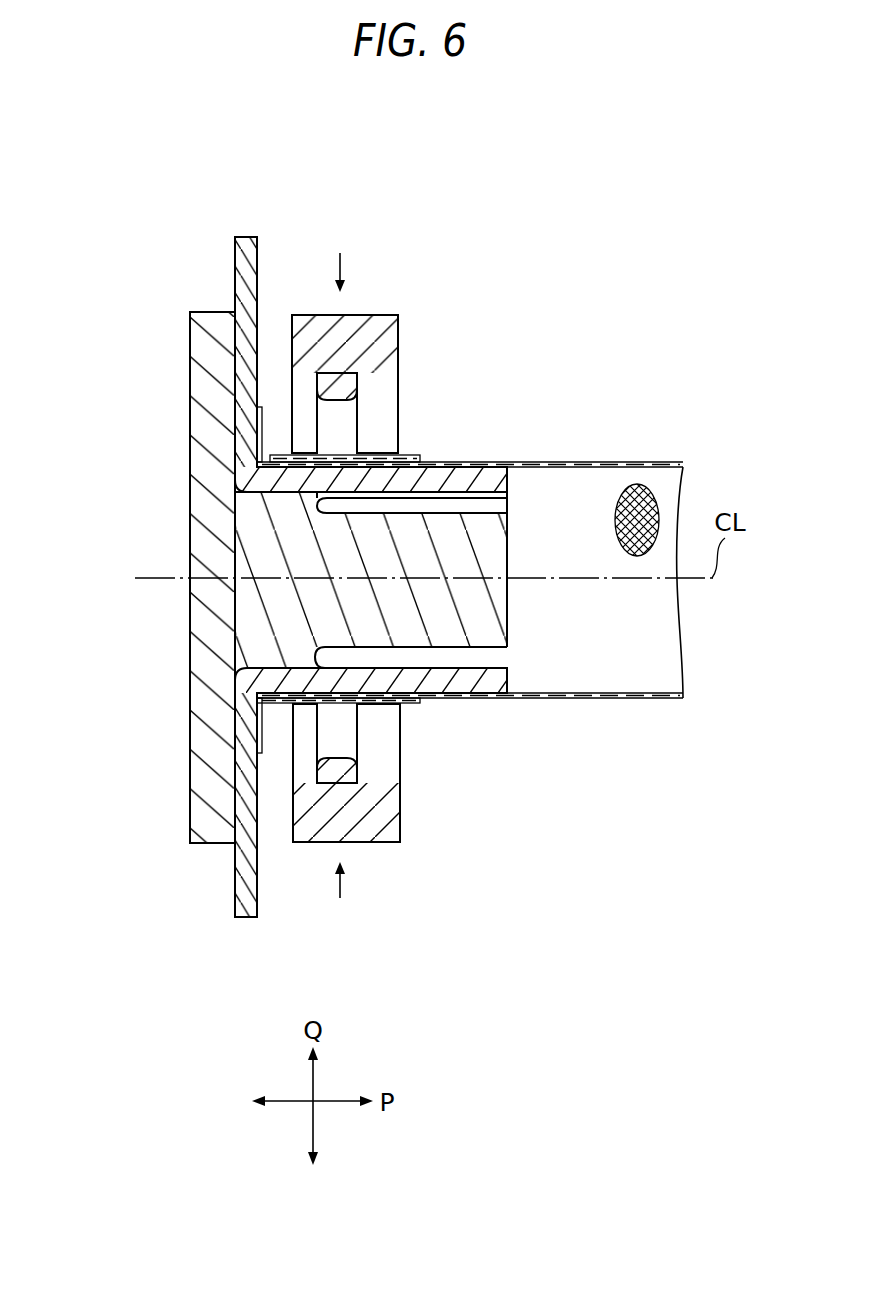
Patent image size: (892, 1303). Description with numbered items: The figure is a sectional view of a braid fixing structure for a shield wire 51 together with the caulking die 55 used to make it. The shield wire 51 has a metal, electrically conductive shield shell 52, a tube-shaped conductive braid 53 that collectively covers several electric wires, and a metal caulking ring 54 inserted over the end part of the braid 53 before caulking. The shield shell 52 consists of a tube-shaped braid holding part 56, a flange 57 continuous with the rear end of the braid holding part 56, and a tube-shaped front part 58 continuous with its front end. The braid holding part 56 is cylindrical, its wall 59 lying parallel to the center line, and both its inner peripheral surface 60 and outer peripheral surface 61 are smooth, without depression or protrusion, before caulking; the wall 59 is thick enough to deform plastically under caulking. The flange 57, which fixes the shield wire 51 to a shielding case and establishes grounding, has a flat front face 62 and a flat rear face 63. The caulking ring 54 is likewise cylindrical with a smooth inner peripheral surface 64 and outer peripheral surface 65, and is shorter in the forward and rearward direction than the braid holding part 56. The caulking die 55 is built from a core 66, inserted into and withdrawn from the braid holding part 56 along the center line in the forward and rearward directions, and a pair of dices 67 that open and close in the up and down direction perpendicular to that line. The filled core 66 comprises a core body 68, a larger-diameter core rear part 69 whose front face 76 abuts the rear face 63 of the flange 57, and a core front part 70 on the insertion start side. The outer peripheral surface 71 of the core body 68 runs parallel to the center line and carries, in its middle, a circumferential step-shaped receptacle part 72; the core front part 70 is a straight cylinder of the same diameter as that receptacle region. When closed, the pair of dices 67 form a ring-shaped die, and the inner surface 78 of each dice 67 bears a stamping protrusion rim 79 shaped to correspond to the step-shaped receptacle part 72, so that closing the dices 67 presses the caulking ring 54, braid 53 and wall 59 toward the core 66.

The shield wire 51 is at (641, 362).
The shield shell 52 is at (246, 228).
The braid 53 is at (656, 460).
The caulking ring 54 is at (416, 455).
The caulking die 55 is at (181, 366).
The braid holding part 56 is at (316, 494).
The flange 57 is at (243, 412).
The front part 58 is at (488, 477).
The wall 59 is at (508, 483).
The inner peripheral surface 60 is at (296, 668).
The outer peripheral surface 61 is at (292, 712).
The front face 62 is at (260, 906).
The rear face 63 is at (237, 901).
The inner peripheral surface 64 is at (457, 692).
The outer peripheral surface 65 is at (420, 697).
The core 66 is at (182, 634).
The dices 67 is at (408, 324).
The core body 68 is at (333, 607).
The core rear part 69 is at (200, 741).
The core front part 70 is at (498, 612).
The outer peripheral surface 71 is at (258, 697).
The step-shaped receptacle part 72 is at (335, 500).
The front face 76 is at (243, 832).
The inner surface 78 is at (387, 387).
The stamping protrusion rim 79 is at (347, 413).